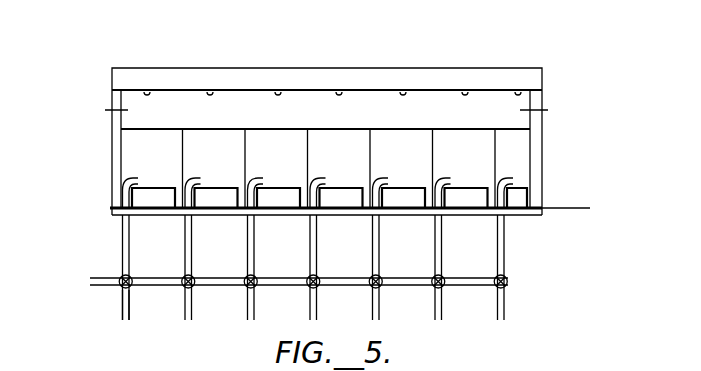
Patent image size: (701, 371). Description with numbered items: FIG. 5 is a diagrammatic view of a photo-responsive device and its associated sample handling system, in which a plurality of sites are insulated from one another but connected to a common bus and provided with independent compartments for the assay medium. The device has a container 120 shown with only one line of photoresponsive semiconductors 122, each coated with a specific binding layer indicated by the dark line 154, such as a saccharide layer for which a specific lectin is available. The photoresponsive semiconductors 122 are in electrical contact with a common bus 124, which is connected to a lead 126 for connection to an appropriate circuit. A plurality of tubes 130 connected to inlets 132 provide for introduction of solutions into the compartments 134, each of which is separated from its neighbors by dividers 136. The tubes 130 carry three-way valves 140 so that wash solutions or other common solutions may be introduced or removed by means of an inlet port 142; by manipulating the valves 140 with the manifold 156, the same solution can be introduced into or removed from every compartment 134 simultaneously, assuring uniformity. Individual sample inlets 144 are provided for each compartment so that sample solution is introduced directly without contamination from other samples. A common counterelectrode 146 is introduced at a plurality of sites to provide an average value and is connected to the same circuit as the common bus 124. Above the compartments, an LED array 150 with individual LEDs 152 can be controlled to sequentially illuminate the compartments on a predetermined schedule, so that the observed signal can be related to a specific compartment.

The container 120 is at (543, 156).
The photoresponsive semiconductors 122 is at (513, 197).
The common bus 124 is at (114, 212).
The lead 126 is at (568, 208).
The tubes 130 is at (323, 277).
The inlets 132 is at (131, 181).
The compartments 134 is at (140, 146).
The dividers 136 is at (184, 137).
The three-way valves 140 is at (118, 290).
The inlet port 142 is at (92, 278).
The sample inlets 144 is at (130, 308).
The counterelectrode 146 is at (108, 110).
The LED array 150 is at (523, 75).
The LEDs 152 is at (150, 88).
The specific binding layer 154 is at (197, 186).
The manifold 156 is at (507, 262).